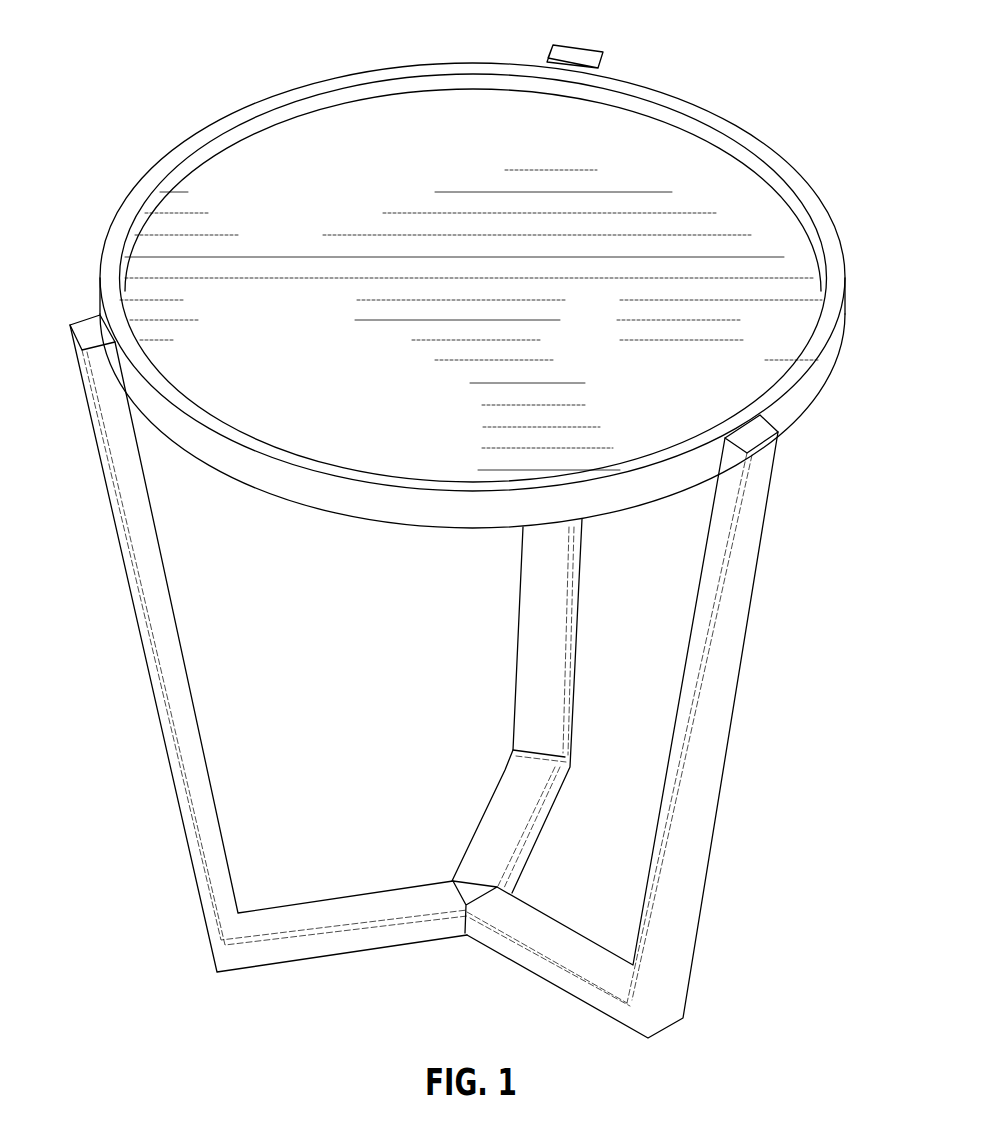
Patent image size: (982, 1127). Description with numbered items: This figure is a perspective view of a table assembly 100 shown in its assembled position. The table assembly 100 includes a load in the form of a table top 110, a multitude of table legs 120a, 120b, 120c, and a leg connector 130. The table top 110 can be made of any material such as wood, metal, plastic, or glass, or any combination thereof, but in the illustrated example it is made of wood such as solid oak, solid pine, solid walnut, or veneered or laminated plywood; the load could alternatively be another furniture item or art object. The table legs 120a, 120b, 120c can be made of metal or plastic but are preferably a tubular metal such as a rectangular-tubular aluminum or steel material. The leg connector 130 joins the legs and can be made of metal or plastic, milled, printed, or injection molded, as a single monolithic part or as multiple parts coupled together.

The table assembly 100 is at (747, 36).
The table top 110 is at (762, 195).
The table leg 120a is at (530, 590).
The table leg 120b is at (732, 642).
The table leg 120c is at (168, 688).
The leg connector 130 is at (471, 892).